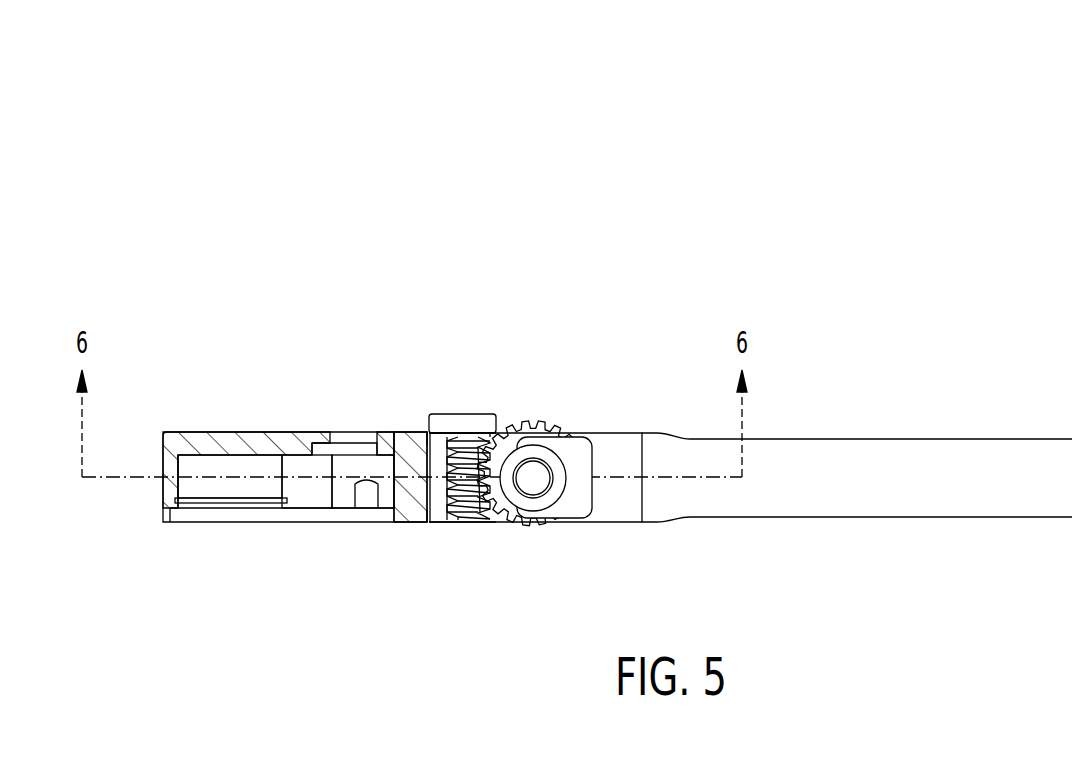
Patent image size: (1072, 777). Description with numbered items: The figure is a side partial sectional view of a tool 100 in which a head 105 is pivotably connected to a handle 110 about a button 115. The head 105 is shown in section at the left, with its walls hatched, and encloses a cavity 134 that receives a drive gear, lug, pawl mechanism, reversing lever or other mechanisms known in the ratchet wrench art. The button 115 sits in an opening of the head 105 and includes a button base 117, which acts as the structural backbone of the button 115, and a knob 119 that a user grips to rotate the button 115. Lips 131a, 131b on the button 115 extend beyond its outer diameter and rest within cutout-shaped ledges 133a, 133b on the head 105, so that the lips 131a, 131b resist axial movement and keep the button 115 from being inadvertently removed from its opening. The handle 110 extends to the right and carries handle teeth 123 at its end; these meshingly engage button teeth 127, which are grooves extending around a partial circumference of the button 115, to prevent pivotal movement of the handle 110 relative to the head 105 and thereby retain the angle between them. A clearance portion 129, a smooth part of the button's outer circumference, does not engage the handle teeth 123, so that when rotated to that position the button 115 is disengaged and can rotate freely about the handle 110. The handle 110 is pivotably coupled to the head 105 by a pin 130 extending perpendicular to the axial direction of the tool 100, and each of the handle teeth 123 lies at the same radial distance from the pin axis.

The tool 100 is at (122, 123).
The head 105 is at (177, 441).
The handle 110 is at (1030, 458).
The button 115 is at (430, 406).
The button base 117 is at (454, 436).
The knob 119 is at (489, 419).
The handle teeth 123 is at (543, 530).
The button teeth 127 is at (452, 508).
The clearance portion 129 is at (487, 512).
The pin 130 is at (536, 486).
The lip 131a is at (446, 440).
The lip 131b is at (430, 522).
The ledge 133a is at (426, 437).
The ledge 133b is at (418, 513).
The cavity 134 is at (250, 513).